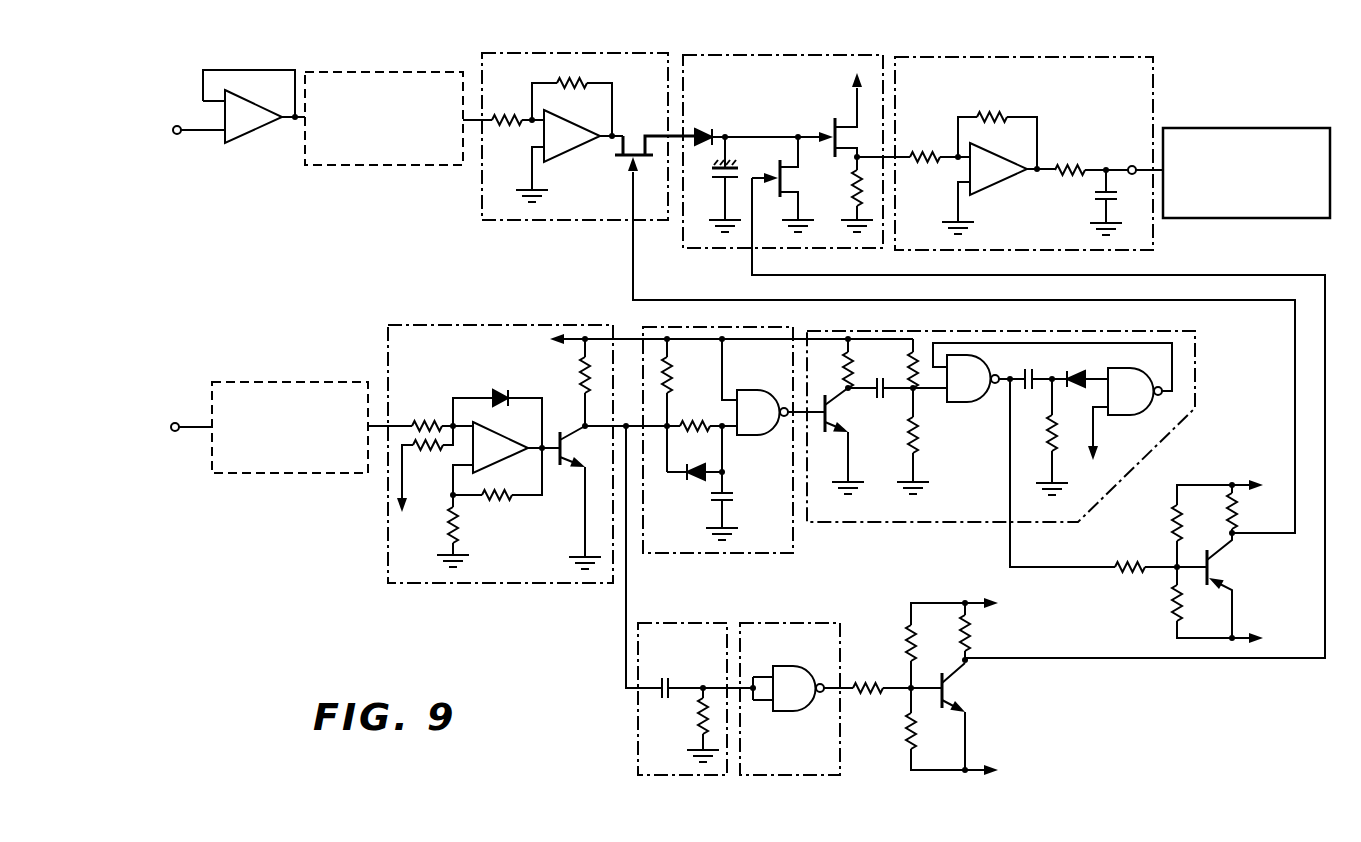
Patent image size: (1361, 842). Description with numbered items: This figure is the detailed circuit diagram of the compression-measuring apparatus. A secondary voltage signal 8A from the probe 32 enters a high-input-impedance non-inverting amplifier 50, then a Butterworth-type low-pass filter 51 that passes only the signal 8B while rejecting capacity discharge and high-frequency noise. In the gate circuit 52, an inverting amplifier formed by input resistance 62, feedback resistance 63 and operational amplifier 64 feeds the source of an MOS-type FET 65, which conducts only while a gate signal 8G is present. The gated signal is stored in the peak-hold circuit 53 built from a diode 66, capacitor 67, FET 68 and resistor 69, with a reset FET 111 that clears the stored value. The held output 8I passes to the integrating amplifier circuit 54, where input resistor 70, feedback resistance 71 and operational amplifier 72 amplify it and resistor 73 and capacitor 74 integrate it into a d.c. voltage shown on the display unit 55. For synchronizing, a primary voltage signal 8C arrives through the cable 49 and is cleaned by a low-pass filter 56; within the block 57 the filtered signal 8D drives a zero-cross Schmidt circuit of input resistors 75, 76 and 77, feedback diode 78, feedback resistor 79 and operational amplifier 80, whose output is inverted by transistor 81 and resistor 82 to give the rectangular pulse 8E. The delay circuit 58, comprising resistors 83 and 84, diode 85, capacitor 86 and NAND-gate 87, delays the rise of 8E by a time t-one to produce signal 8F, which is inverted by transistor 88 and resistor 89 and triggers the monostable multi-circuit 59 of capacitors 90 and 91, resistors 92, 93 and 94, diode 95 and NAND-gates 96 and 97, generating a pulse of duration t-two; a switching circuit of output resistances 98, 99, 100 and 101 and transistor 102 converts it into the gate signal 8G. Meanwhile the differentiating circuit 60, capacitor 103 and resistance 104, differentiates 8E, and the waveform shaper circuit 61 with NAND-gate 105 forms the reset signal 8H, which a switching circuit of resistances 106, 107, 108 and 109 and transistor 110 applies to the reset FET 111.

The probe 32 is at (179, 126).
The secondary voltage signal 8A is at (198, 132).
The non-inverting amplifier 50 is at (250, 130).
The low-pass filter 51 is at (390, 72).
The gate circuit 52 is at (600, 53).
The output signal 8B is at (476, 121).
The input resistance 62 is at (505, 112).
The feedback resistance 63 is at (575, 82).
The differential-type operational amplifier 64 is at (578, 148).
The MOS-type FET 65 is at (641, 138).
The peak-hold circuit 53 is at (820, 55).
The diode 66 is at (705, 126).
The capacitor 67 is at (736, 172).
The FET 68 is at (835, 126).
The resistor 69 is at (852, 190).
The reset FET 111 is at (796, 176).
The integrating amplifier circuit 54 is at (1063, 57).
The input resistor 70 is at (922, 150).
The output signal of the hold circuit 8I is at (900, 160).
The feedback resistance 71 is at (998, 115).
The differential-type operational amplifier 72 is at (990, 186).
The resistor 73 is at (1075, 163).
The capacitor 74 is at (1097, 200).
The display unit 55 is at (1275, 128).
The gate signal 8G is at (633, 264).
The reset signal 8H is at (752, 275).
The cable 49 is at (178, 423).
The primary voltage signal 8C is at (193, 430).
The low-pass filter 56 is at (290, 382).
The comparator stage 57 is at (490, 325).
The primary voltage signal 8D is at (388, 430).
The input resistor 75 is at (432, 420).
The input resistor 76 is at (433, 452).
The input resistor 77 is at (462, 528).
The feedback diode 78 is at (497, 391).
The feedback resistor 79 is at (505, 500).
The differential-type operational amplifier 80 is at (505, 436).
The transistor 81 is at (573, 462).
The resistor 82 is at (580, 378).
The delay circuit 58 is at (793, 532).
The resistor 83 is at (678, 372).
The resistor 84 is at (698, 414).
The diode 85 is at (697, 482).
The capacitor 86 is at (738, 497).
The NAND-gate 87 is at (746, 390).
The delayed signal 8F is at (803, 414).
The monostable multi-circuit 59 is at (1195, 365).
The transistor 88 is at (843, 434).
The resistor 89 is at (845, 366).
The capacitor 90 is at (889, 400).
The capacitor 91 is at (1035, 368).
The resistor 92 is at (908, 370).
The resistor 93 is at (920, 440).
The resistor 94 is at (1048, 432).
The diode 95 is at (1082, 370).
The NAND-gate 96 is at (962, 402).
The NAND-gate 97 is at (1112, 415).
The output resistance 98 is at (1130, 560).
The output resistance 99 is at (1171, 528).
The output resistance 100 is at (1169, 598).
The output resistance 101 is at (1240, 515).
The transistor 102 is at (1222, 572).
The differentiating circuit 60 is at (672, 623).
The pulse 8E is at (626, 620).
The capacitor 103 is at (672, 680).
The resistance 104 is at (697, 716).
The waveform shaper circuit 61 is at (788, 623).
The NAND-gate 105 is at (790, 711).
The resistance 106 is at (862, 684).
The resistance 107 is at (908, 630).
The resistance 108 is at (905, 728).
The resistance 109 is at (975, 632).
The transistor 110 is at (966, 686).